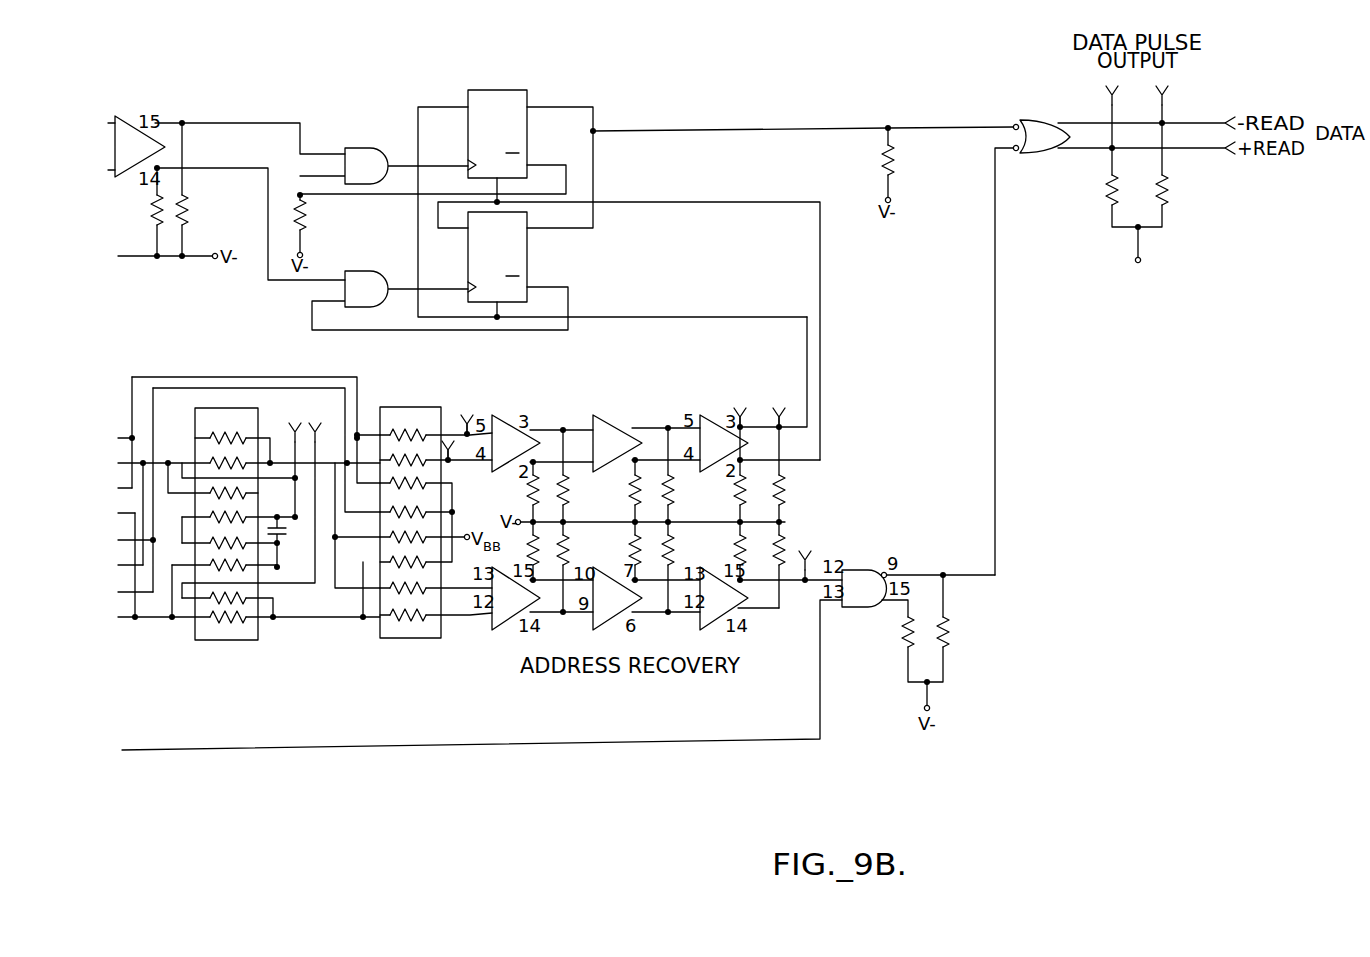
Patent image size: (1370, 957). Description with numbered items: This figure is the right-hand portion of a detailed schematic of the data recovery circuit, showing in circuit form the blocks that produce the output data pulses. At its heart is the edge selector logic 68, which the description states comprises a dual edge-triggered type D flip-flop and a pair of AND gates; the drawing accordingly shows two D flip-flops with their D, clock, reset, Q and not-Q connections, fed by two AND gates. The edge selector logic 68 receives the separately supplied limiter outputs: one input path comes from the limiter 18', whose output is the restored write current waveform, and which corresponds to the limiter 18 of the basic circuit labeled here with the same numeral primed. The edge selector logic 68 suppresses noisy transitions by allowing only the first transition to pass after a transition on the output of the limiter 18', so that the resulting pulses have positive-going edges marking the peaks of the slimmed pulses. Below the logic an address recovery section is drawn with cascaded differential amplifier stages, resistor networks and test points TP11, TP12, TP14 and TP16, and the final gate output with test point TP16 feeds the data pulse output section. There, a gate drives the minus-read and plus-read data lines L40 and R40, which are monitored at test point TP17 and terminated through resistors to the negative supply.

The edge selector logic 68 is at (567, 90).
The limiter 18' is at (626, 426).
The limiter 18 is at (626, 426).
The minus read output line L40 is at (1146, 113).
The plus read output line R40 is at (1146, 157).
The test point 11 TP11 is at (463, 418).
The test point 12 TP12 is at (760, 400).
The test point 14 TP14 is at (308, 424).
The test point 16 TP16 is at (815, 553).
The test point 17 TP17 is at (1137, 167).